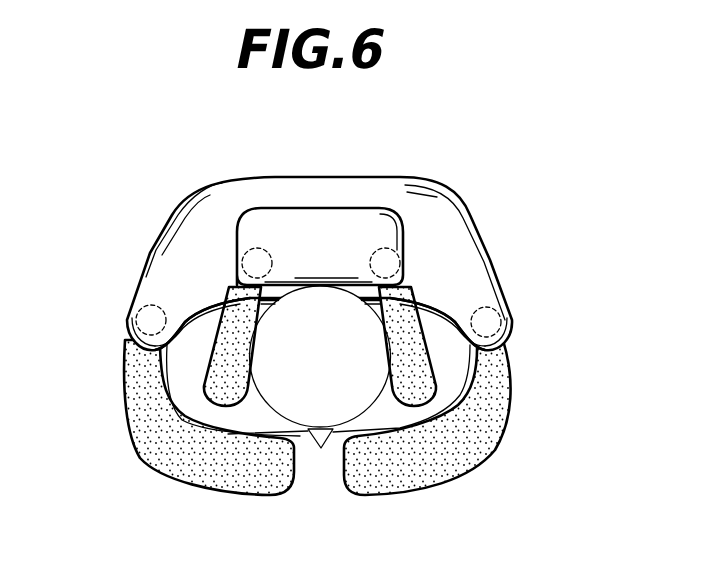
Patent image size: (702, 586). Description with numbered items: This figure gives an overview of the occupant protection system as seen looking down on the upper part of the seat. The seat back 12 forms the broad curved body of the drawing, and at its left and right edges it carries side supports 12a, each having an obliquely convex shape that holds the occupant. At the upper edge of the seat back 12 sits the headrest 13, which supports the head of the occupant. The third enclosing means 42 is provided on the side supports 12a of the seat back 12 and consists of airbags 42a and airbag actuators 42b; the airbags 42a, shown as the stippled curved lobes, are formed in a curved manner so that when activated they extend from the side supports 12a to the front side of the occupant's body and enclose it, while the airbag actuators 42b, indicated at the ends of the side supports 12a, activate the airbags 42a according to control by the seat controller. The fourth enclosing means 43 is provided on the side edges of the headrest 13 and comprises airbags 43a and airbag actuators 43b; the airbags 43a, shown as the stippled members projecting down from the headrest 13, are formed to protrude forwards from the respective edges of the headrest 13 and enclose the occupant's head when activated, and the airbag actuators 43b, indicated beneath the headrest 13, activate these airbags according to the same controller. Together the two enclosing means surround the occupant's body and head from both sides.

The seat back 12 is at (467, 207).
The side support 12a is at (128, 325).
The headrest 13 is at (319, 233).
The third enclosing means 42 is at (125, 455).
The airbag 42a is at (223, 470).
The airbag actuator 42b is at (132, 303).
The fourth enclosing means 43 is at (188, 370).
The airbag 43a is at (220, 333).
The airbag actuator 43b is at (240, 252).